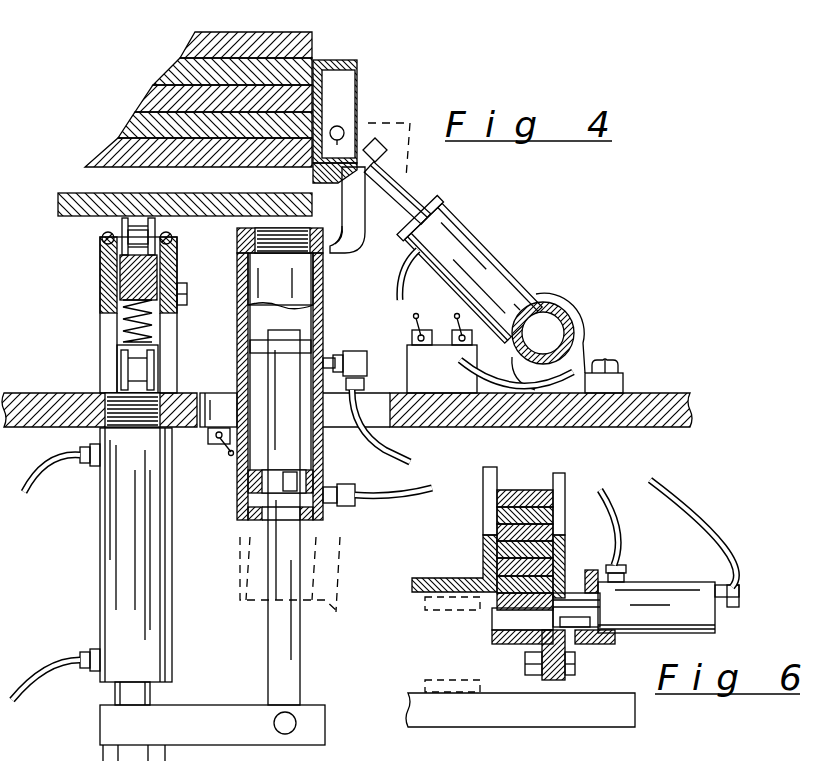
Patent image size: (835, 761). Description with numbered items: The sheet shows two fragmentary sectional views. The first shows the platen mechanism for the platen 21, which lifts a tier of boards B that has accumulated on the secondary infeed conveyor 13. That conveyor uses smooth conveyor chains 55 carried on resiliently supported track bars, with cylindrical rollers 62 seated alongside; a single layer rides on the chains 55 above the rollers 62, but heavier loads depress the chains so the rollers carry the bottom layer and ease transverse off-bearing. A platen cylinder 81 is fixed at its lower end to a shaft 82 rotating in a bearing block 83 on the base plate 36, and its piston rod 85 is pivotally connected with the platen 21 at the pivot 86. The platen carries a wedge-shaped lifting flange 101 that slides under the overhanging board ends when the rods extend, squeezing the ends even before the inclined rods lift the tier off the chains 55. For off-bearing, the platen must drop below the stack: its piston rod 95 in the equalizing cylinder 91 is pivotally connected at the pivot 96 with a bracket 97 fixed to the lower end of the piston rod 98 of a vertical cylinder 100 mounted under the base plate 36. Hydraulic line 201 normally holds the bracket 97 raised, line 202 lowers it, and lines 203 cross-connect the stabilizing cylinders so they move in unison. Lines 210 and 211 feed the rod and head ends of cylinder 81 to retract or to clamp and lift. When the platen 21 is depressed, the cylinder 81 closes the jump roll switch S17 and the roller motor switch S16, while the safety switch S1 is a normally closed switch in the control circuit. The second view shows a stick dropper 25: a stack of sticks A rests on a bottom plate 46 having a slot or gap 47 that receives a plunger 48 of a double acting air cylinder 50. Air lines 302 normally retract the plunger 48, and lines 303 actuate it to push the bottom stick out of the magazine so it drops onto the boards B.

In FIG. 4, the boards B is at (193, 43).
In FIG. 6, the boards B is at (622, 727).
In FIG. 4, the platen 21 is at (338, 60).
In FIG. 4, the pivotal connection 86 is at (344, 126).
In FIG. 4, the lifting flange 101 is at (330, 172).
In FIG. 4, the secondary infeed conveyor 13 is at (104, 305).
In FIG. 6, the secondary infeed conveyor 13 is at (384, 750).
In FIG. 4, the conveyor chains 55 is at (122, 222).
In FIG. 4, the cylindrical rollers 62 is at (104, 244).
In FIG. 4, the base plate 36 is at (678, 394).
In FIG. 4, the cylinder 91 is at (237, 333).
In FIG. 4, the piston rod 95 is at (268, 638).
In FIG. 4, the hydraulic lines 203 is at (425, 476).
In FIG. 4, the piston rod 85 is at (413, 196).
In FIG. 4, the platen cylinder 81 is at (474, 238).
In FIG. 4, the jump roll switch S17 is at (517, 307).
In FIG. 4, the shaft 82 is at (565, 322).
In FIG. 4, the bearing block 83 is at (586, 348).
In FIG. 4, the roller motor switch S16 is at (412, 332).
In FIG. 4, the hydraulic line 210 is at (400, 284).
In FIG. 4, the hydraulic line 211 is at (460, 370).
In FIG. 4, the vertical cylinder 100 is at (170, 552).
In FIG. 4, the hydraulic line 202 is at (40, 485).
In FIG. 4, the hydraulic line 201 is at (32, 670).
In FIG. 4, the piston rod 98 is at (115, 697).
In FIG. 4, the bracket 97 is at (202, 712).
In FIG. 4, the pivot 96 is at (275, 720).
In FIG. 4, the safety switch S1 is at (208, 437).
In FIG. 6, the stick dropper 25 is at (566, 490).
In FIG. 6, the stack of sticks A is at (540, 490).
In FIG. 6, the bottom plate 46 is at (493, 623).
In FIG. 6, the slot or gap 47 is at (516, 624).
In FIG. 6, the plunger 48 is at (578, 630).
In FIG. 6, the double acting air cylinder 50 is at (672, 583).
In FIG. 6, the air lines 302 is at (620, 535).
In FIG. 6, the air lines 303 is at (706, 522).